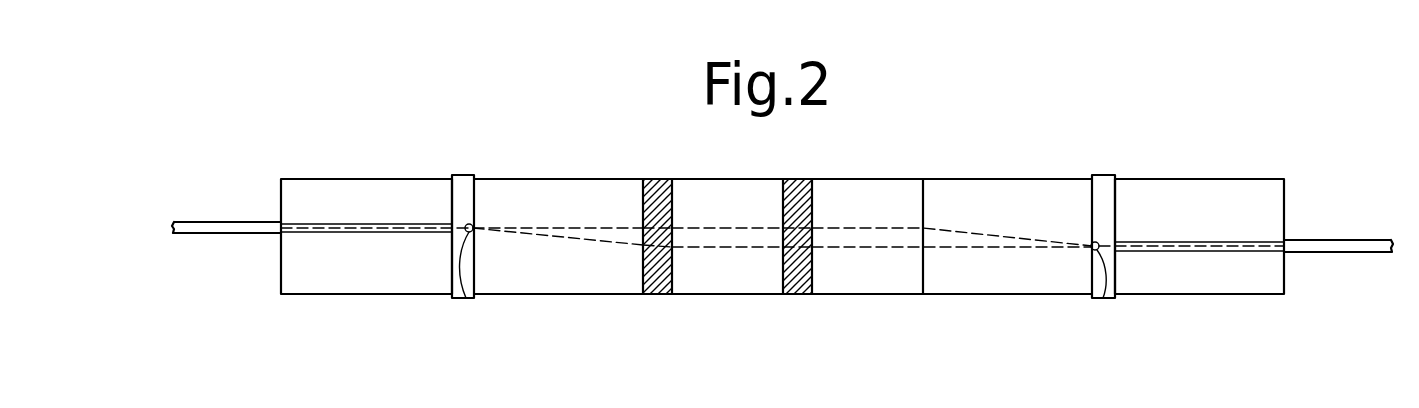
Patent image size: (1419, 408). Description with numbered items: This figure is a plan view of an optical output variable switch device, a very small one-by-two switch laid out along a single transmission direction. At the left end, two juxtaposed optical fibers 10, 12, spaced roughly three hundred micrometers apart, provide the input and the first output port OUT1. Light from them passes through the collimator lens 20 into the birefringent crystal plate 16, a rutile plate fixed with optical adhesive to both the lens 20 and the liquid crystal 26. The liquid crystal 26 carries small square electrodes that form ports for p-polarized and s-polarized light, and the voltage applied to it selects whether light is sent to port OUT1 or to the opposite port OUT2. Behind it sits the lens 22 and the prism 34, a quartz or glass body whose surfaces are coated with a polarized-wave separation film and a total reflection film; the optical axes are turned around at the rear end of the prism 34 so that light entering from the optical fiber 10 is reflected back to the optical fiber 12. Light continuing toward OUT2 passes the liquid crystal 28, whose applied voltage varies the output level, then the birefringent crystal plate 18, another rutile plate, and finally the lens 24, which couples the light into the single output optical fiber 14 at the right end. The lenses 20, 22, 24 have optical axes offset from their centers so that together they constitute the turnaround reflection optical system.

The optical fiber 10 is at (320, 199).
The optical fiber 12 is at (208, 222).
The output optical fiber 14 is at (1357, 254).
The birefringent crystal plate 16 is at (593, 294).
The birefringent crystal plate 18 is at (1030, 294).
The lens 20 is at (486, 265).
The lens 22 is at (466, 298).
The lens 24 is at (1103, 298).
The liquid crystal 26 is at (660, 294).
The liquid crystal 28 is at (795, 294).
The prism 34 is at (730, 289).